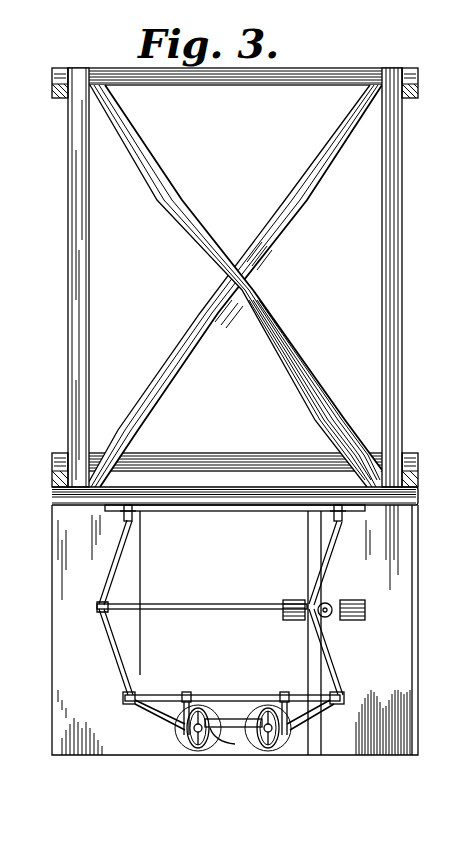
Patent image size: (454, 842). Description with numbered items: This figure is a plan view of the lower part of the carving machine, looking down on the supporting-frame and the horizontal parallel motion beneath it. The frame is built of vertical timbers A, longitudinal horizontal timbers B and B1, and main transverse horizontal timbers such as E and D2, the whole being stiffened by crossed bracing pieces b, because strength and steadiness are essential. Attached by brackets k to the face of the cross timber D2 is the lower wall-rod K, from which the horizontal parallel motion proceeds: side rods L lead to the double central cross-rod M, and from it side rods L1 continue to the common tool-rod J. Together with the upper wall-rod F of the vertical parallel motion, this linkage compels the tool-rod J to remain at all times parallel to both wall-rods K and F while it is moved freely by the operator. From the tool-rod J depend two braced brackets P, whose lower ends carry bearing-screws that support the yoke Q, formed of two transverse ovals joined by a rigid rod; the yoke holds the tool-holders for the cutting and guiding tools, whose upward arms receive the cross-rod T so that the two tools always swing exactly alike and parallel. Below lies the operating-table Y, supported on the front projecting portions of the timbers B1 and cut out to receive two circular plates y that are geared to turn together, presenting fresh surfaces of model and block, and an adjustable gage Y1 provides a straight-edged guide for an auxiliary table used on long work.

The vertical timbers A is at (58, 100).
The main transverse horizontal timber E is at (262, 90).
The wall-rod F is at (215, 456).
The longitudinal horizontal timber B is at (378, 269).
The longitudinal horizontal timber B1 is at (85, 305).
The crossed pieces b is at (190, 211).
The main transverse horizontal timber D2 is at (60, 505).
The wall-rod K is at (236, 512).
The brackets k is at (118, 510).
The side rods L is at (118, 563).
The side rods L1 is at (118, 637).
The double central cross-rod M is at (200, 605).
The operating-table Y is at (235, 630).
The adjustable gage Y1 is at (306, 569).
The tool-rod J is at (234, 696).
The braced brackets P is at (314, 722).
The cross-rod T is at (236, 719).
The circular plates y is at (216, 746).
The yoke Q is at (222, 742).